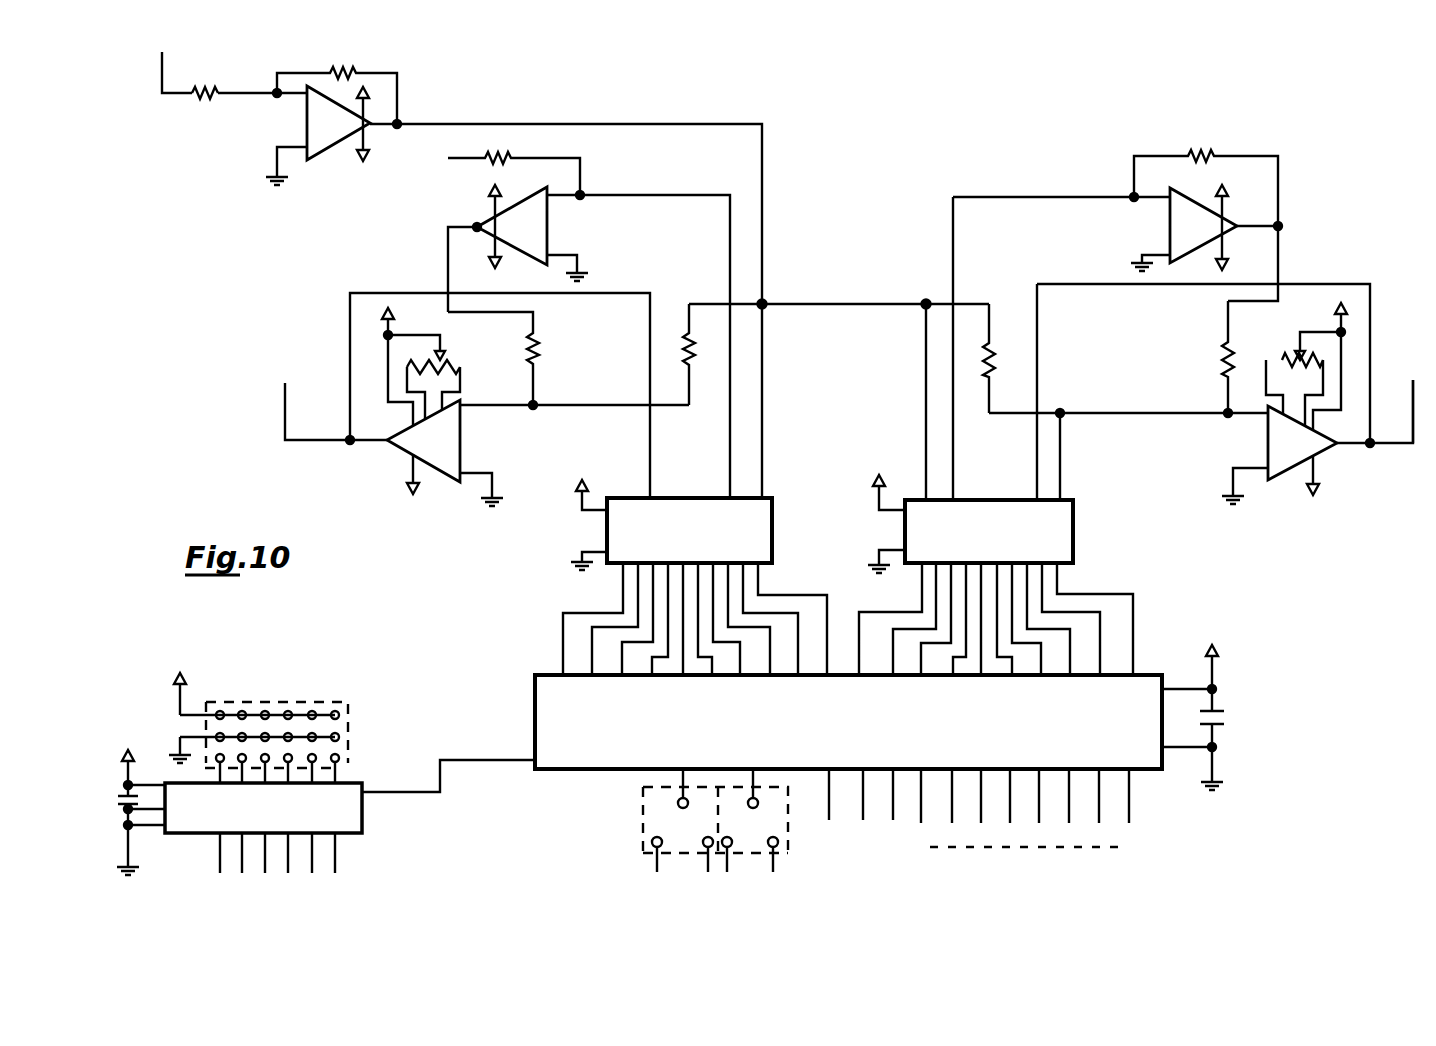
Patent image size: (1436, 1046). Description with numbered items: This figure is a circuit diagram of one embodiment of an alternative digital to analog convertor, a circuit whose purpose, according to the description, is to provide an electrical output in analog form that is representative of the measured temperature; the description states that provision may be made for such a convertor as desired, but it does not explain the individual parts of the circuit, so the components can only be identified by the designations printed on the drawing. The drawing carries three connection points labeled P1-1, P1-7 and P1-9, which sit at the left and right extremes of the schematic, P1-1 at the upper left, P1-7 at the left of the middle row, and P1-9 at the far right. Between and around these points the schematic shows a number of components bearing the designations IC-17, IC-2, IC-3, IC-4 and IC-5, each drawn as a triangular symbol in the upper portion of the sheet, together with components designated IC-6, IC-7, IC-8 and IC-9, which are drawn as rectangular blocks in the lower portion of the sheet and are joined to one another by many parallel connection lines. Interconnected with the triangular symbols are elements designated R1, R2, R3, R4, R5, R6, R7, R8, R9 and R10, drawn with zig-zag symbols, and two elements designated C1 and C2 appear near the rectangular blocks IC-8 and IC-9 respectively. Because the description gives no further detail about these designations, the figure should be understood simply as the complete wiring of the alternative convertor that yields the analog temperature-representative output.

The connector pin P1-1 input P1-1 is at (149, 72).
The resistor R1 is at (205, 84).
The feedback resistor R2 is at (337, 87).
The operational amplifier IC-17 is at (322, 131).
The operational amplifier IC-2 is at (542, 230).
The feedback resistor R3 is at (514, 164).
The connector pin P1-7 output P1-7 is at (327, 400).
The operational amplifier IC-3 is at (451, 410).
The offset potentiometer R4 is at (430, 377).
The resistor R5 is at (508, 358).
The resistor R9 is at (702, 354).
The digital-to-analog converter IC-6 is at (695, 568).
The digital-to-analog converter IC-7 is at (996, 564).
The interface/port chip IC-8 is at (848, 795).
The decoupling capacitor C1 is at (1208, 707).
The address decoder IC-9 is at (350, 784).
The decoupling capacitor C2 is at (125, 800).
The operational amplifier IC-4 is at (1176, 223).
The feedback resistor R7 is at (1206, 179).
The resistor R8 is at (1003, 358).
The resistor R6 is at (1211, 357).
The operational amplifier IC-5 is at (1275, 407).
The offset potentiometer R10 is at (1303, 379).
The connector pin P1-9 output P1-9 is at (1411, 402).